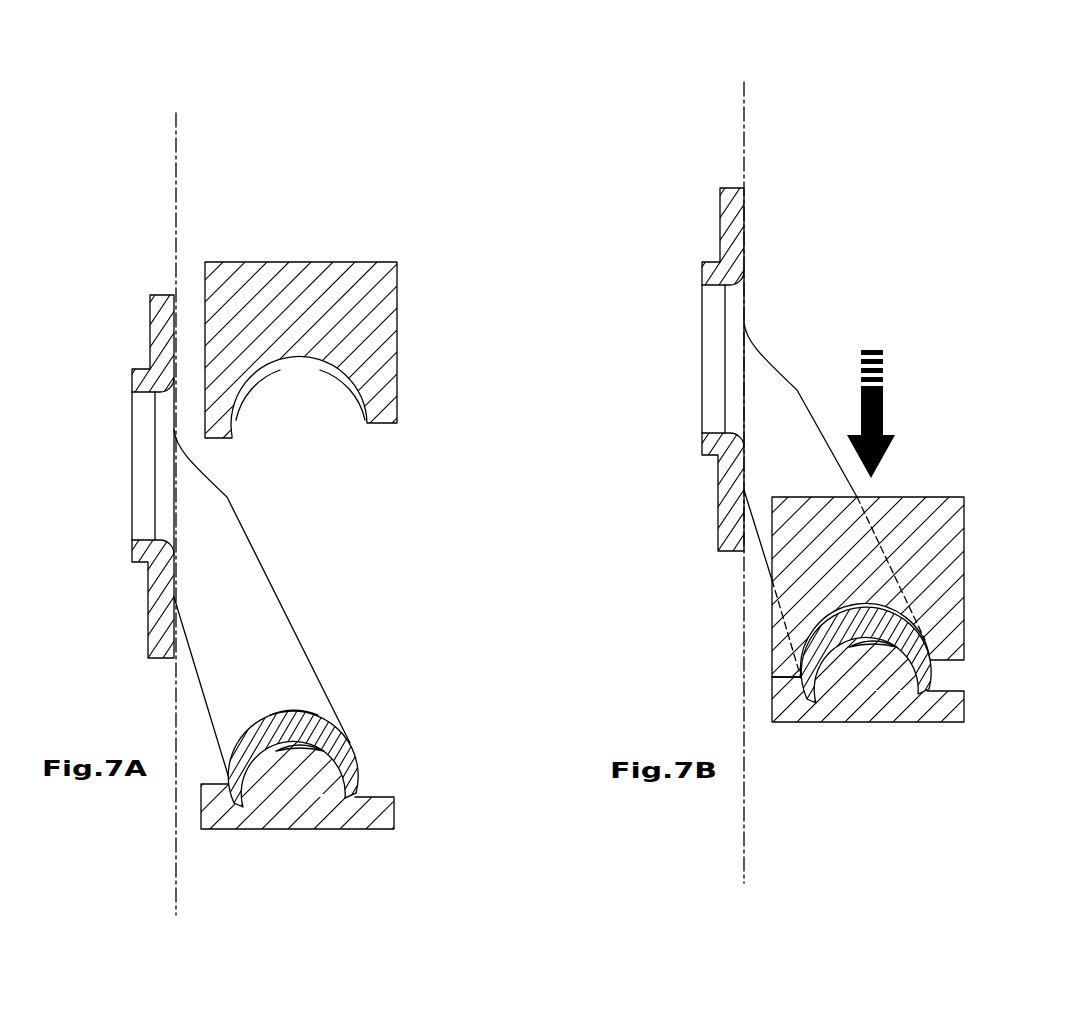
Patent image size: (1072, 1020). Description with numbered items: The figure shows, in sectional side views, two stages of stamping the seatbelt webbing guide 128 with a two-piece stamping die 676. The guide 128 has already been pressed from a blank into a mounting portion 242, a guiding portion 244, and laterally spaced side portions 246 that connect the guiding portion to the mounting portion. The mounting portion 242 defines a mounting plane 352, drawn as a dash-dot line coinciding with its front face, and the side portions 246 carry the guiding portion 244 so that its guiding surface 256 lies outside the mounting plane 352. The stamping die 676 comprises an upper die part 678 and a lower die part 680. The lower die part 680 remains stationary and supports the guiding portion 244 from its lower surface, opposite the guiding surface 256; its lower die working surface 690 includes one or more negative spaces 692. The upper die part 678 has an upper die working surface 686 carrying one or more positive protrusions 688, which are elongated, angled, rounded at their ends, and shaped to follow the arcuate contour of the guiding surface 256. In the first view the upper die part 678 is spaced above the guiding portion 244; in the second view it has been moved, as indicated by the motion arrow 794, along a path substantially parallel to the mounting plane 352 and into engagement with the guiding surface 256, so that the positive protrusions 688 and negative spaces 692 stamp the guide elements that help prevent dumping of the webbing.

In FIG. 7A, the guide 128 is at (112, 411).
In FIG. 7B, the guide 128 is at (690, 240).
In FIG. 7A, the mounting portion 242 is at (141, 497).
In FIG. 7B, the mounting portion 242 is at (717, 393).
In FIG. 7A, the guiding portion 244 is at (338, 742).
In FIG. 7B, the guiding portion 244 is at (925, 663).
In FIG. 7A, the side portions 246 is at (253, 620).
In FIG. 7B, the side portions 246 is at (787, 420).
In FIG. 7A, the guiding surface 256 is at (297, 710).
In FIG. 7A, the mounting plane 352 is at (177, 230).
In FIG. 7B, the mounting plane 352 is at (745, 123).
In FIG. 7A, the stamping die 676 is at (370, 232).
In FIG. 7B, the stamping die 676 is at (985, 466).
In FIG. 7A, the upper die part 678 is at (348, 316).
In FIG. 7B, the upper die part 678 is at (937, 558).
In FIG. 7A, the lower die part 680 is at (312, 800).
In FIG. 7B, the lower die part 680 is at (925, 708).
In FIG. 7A, the upper die working surface 686 is at (263, 378).
In FIG. 7A, the positive protrusions 688 is at (327, 382).
In FIG. 7A, the lower die working surface 690 is at (356, 768).
In FIG. 7A, the negative spaces 692 is at (277, 747).
In FIG. 7B, the negative spaces 692 is at (873, 644).
In FIG. 7B, the motion arrow 794 is at (883, 400).